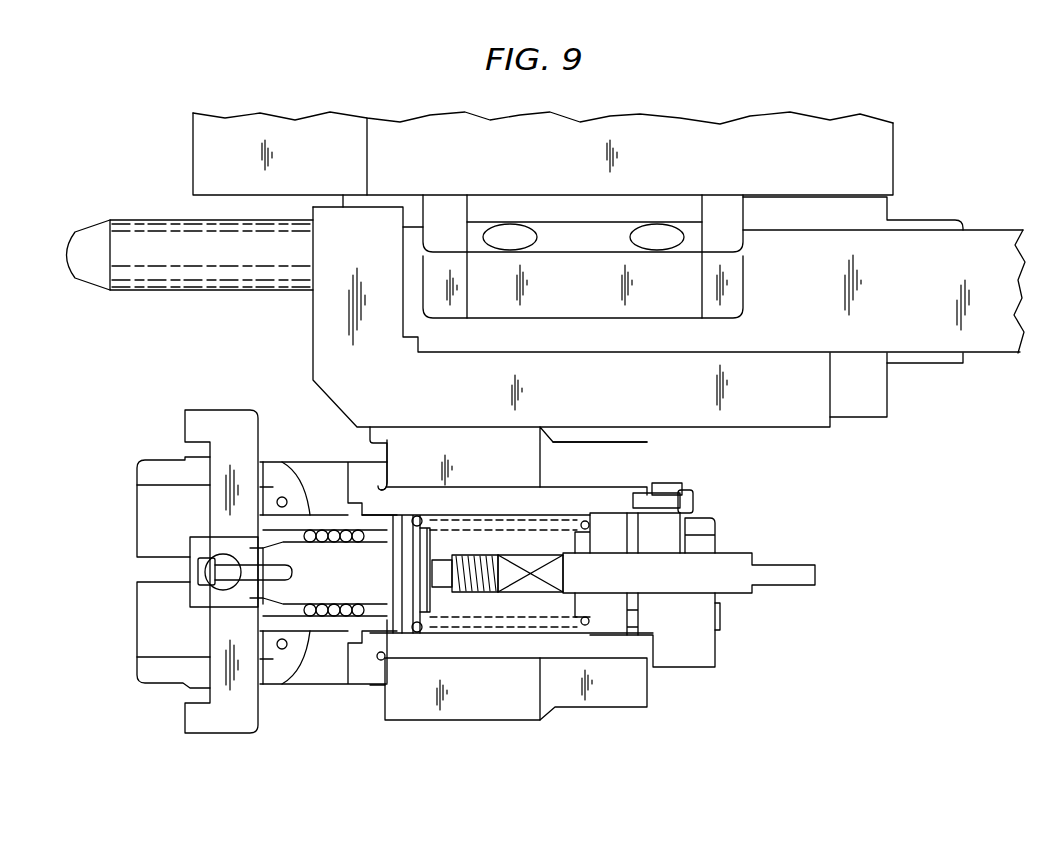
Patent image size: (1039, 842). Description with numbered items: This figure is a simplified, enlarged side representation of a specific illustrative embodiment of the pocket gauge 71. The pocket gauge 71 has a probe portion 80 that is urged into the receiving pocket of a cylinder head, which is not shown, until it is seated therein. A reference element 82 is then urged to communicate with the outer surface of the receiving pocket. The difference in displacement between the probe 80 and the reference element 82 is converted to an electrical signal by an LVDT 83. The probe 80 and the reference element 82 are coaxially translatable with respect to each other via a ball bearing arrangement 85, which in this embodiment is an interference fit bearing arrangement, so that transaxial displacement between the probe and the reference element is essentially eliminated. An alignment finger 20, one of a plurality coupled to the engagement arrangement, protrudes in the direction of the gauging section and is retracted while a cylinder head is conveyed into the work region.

The alignment finger 20 is at (220, 280).
The pocket gauge 71 is at (597, 697).
The probe portion 80 is at (168, 673).
The reference element 82 is at (233, 717).
The LVDT 83 is at (530, 585).
The ball bearing arrangement 85 is at (330, 608).